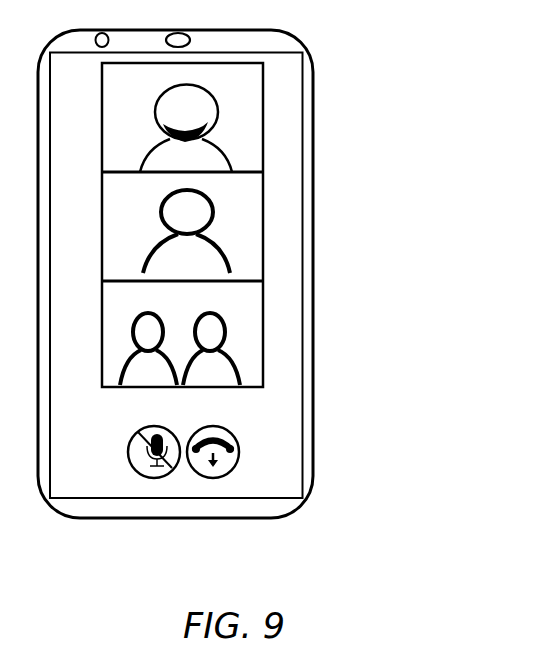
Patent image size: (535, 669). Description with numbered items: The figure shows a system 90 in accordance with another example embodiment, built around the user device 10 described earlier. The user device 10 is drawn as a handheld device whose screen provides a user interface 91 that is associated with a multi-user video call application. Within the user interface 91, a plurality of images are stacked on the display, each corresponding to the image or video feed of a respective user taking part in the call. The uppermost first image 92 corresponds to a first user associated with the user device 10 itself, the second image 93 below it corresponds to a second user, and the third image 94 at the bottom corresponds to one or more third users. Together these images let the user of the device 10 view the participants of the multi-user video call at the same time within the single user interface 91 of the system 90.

The user device 10 is at (122, 520).
The system 90 is at (373, 435).
The user interface 91 is at (262, 443).
The first image 92 is at (263, 138).
The second image 93 is at (263, 223).
The third image 94 is at (258, 333).